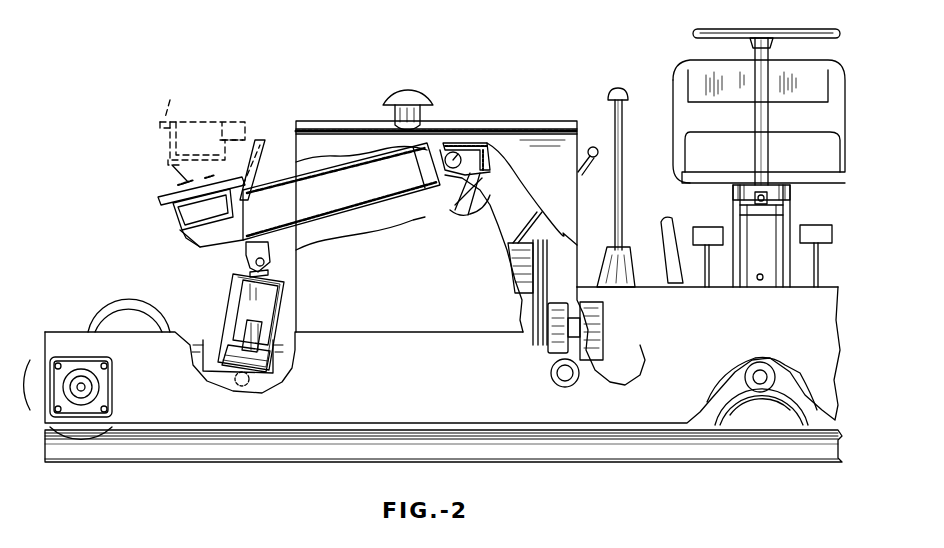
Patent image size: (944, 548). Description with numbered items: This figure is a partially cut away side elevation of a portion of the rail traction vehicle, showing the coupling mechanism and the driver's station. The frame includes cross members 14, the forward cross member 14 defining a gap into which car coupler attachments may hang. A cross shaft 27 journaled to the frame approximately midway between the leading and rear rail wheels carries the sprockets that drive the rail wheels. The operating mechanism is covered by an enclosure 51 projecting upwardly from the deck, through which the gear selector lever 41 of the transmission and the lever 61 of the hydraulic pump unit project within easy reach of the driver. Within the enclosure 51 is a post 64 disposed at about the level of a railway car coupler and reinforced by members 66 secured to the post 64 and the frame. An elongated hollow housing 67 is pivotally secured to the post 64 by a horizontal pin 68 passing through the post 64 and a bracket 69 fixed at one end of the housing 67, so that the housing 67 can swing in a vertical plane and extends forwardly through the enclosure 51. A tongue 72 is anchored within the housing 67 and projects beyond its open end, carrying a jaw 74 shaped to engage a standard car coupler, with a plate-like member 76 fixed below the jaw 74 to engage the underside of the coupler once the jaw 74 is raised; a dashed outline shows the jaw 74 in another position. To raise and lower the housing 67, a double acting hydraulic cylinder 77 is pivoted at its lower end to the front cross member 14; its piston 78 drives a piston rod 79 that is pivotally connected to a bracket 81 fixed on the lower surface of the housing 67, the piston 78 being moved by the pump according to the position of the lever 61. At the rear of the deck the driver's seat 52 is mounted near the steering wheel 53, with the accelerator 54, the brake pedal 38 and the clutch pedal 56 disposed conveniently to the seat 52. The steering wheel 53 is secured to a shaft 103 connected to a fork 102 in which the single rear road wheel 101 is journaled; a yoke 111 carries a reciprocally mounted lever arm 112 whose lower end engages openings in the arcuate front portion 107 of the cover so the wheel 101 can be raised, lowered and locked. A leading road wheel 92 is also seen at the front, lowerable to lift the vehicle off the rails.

The cross member 14 is at (197, 340).
The cross shaft 27 is at (567, 373).
The brake pedal 38 is at (703, 225).
The gear selector lever 41 is at (620, 88).
The enclosure 51 is at (556, 120).
The driver's seat 52 is at (675, 120).
The steering wheel 53 is at (722, 26).
The accelerator 54 is at (670, 270).
The clutch pedal 56 is at (815, 226).
The lever 61 is at (596, 145).
The post 64 is at (482, 140).
The reinforcing members 66 is at (480, 193).
The elongated hollow housing 67 is at (341, 191).
The horizontal pin 68 is at (452, 140).
The bracket 69 is at (452, 152).
The tongue 72 is at (284, 128).
The jaw 74 is at (176, 98).
The member 76 is at (182, 240).
The hydraulic cylinder 77 is at (245, 296).
The piston 78 is at (270, 358).
The piston rod 79 is at (262, 332).
The bracket 81 is at (248, 258).
The leading road wheel 92 is at (128, 310).
The rear road wheel 101 is at (760, 410).
The fork 102 is at (768, 360).
The shaft 103 is at (756, 118).
The arcuate front portion 107 is at (756, 280).
The yoke 111 is at (740, 196).
The lever arm 112 is at (770, 196).